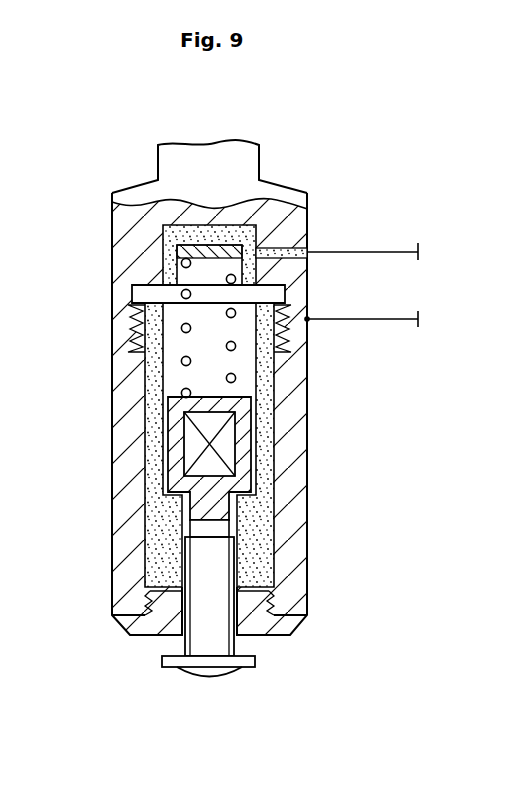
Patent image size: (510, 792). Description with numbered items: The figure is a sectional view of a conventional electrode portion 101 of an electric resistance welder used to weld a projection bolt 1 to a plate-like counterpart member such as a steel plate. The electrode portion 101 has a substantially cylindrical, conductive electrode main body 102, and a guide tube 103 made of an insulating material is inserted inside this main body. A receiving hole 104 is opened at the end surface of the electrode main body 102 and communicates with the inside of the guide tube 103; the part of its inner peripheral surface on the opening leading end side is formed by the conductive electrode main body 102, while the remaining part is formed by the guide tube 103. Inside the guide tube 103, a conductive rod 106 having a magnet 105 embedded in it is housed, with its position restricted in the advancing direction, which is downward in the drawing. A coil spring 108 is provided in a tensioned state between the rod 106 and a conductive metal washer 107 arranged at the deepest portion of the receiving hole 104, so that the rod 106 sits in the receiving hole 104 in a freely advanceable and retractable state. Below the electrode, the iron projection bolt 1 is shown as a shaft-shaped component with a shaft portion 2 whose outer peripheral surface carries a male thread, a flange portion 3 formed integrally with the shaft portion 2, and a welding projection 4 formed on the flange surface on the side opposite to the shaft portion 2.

The electrode portion 101 is at (350, 174).
The electrode main body 102 is at (110, 464).
The guide tube 103 is at (258, 542).
The receiving hole 104 is at (190, 538).
The magnet 105 is at (226, 440).
The rod 106 is at (222, 501).
The metal washer 107 is at (240, 248).
The coil spring 108 is at (236, 378).
The projection bolt 1 is at (206, 626).
The shaft portion 2 is at (224, 648).
The flange portion 3 is at (167, 661).
The welding projection 4 is at (200, 670).